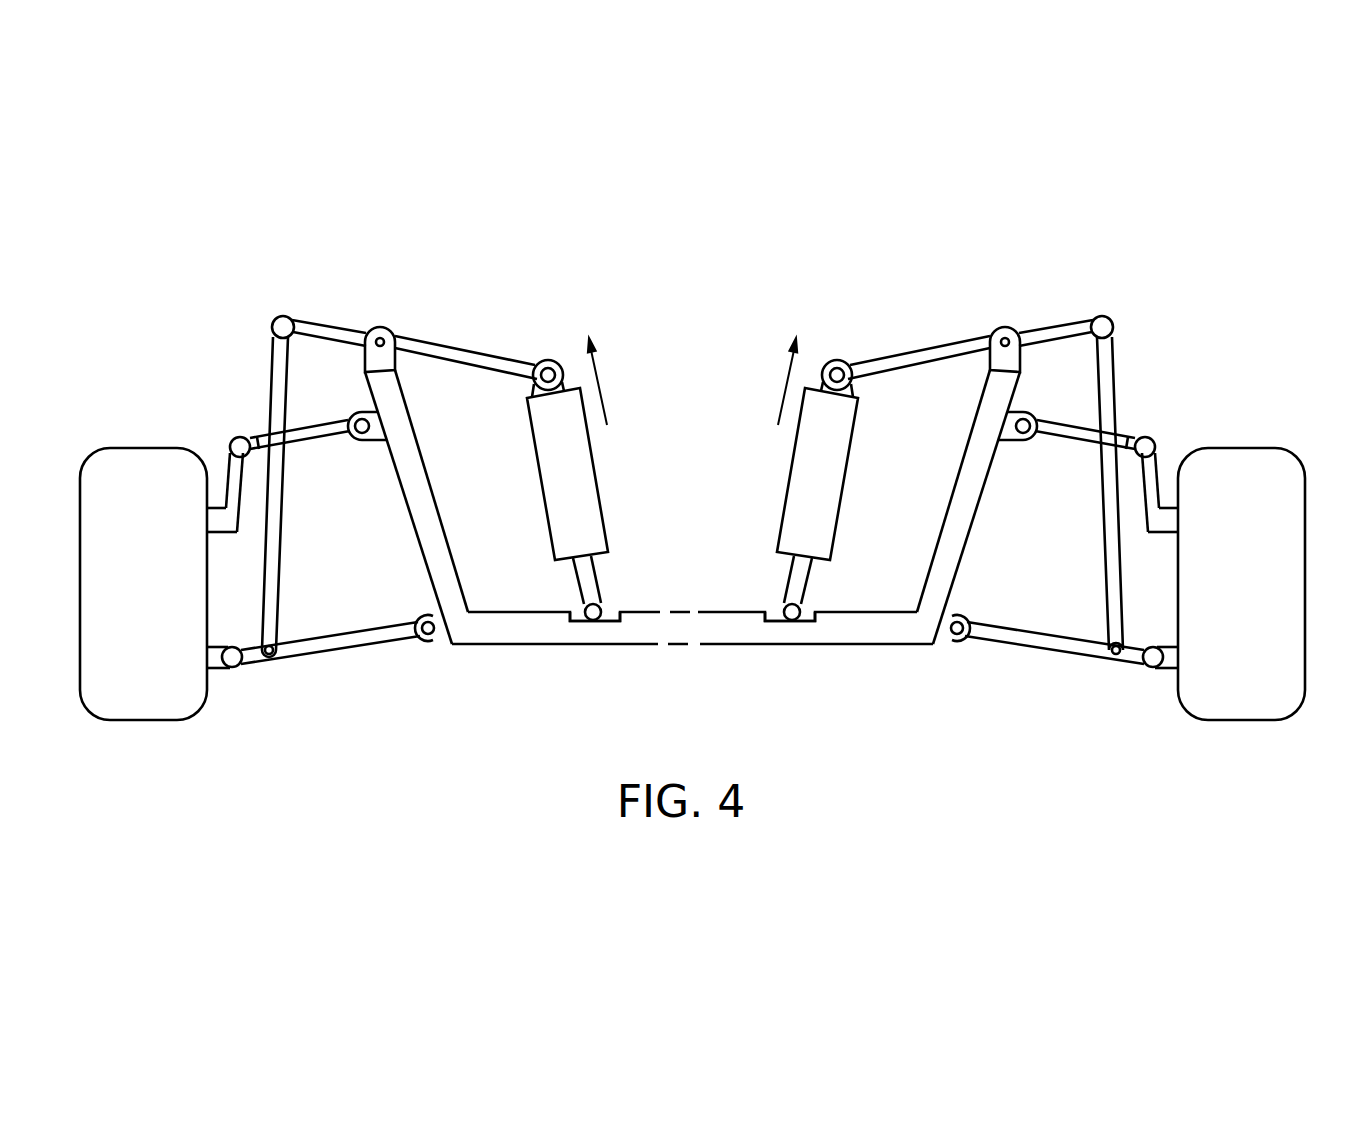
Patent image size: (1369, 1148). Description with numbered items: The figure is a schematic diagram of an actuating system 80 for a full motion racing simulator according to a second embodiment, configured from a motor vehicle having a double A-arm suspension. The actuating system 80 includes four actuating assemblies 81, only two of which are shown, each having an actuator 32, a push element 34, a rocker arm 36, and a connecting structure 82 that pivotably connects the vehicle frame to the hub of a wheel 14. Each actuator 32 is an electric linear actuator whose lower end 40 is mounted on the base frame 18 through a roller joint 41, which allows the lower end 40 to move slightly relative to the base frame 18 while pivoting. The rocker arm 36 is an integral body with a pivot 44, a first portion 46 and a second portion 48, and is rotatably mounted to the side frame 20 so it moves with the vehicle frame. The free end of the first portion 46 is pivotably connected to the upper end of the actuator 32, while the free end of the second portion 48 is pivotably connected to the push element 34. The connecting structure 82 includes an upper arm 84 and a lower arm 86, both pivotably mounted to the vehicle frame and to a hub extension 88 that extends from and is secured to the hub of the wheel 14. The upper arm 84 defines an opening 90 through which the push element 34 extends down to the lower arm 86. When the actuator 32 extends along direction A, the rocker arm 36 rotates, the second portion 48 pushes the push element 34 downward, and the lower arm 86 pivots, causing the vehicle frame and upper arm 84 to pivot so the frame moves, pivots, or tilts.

The wheel 14 is at (150, 722).
The base frame 18 is at (698, 647).
The side frame 20 is at (437, 498).
The actuator 32 is at (598, 477).
The push element 34 is at (270, 392).
The rocker arm 36 is at (441, 322).
The lower end 40 is at (783, 607).
The roller joint 41 is at (573, 622).
The pivot 44 is at (381, 338).
The first portion 46 is at (493, 357).
The second portion 48 is at (327, 320).
The actuating system 80 is at (682, 238).
The actuating assembly 81 is at (692, 429).
The connecting structure 82 is at (701, 700).
The upper arm 84 is at (340, 437).
The lower arm 86 is at (323, 647).
The hub extension 88 is at (225, 495).
The opening 90 is at (327, 433).